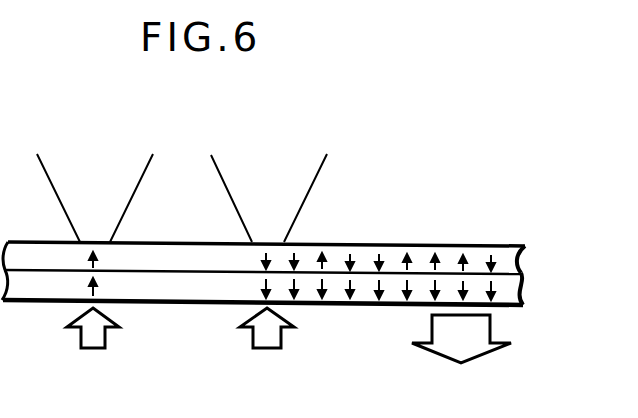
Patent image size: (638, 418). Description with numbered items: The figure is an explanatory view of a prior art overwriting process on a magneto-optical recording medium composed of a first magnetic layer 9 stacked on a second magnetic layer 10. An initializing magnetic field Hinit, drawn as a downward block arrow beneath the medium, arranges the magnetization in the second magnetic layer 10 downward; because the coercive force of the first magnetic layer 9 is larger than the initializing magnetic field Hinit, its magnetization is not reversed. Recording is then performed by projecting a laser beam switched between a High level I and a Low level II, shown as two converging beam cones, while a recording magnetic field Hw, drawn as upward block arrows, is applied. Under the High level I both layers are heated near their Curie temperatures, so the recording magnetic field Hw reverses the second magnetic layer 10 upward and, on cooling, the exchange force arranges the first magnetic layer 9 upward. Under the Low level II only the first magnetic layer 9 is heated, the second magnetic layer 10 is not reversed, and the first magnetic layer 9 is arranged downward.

The first magnetic layer 9 is at (527, 258).
The second magnetic layer 10 is at (526, 292).
The High level I is at (100, 137).
The Low level II is at (276, 138).
The recording magnetic field Hw is at (196, 341).
The initializing magnetic field Hinit is at (474, 357).